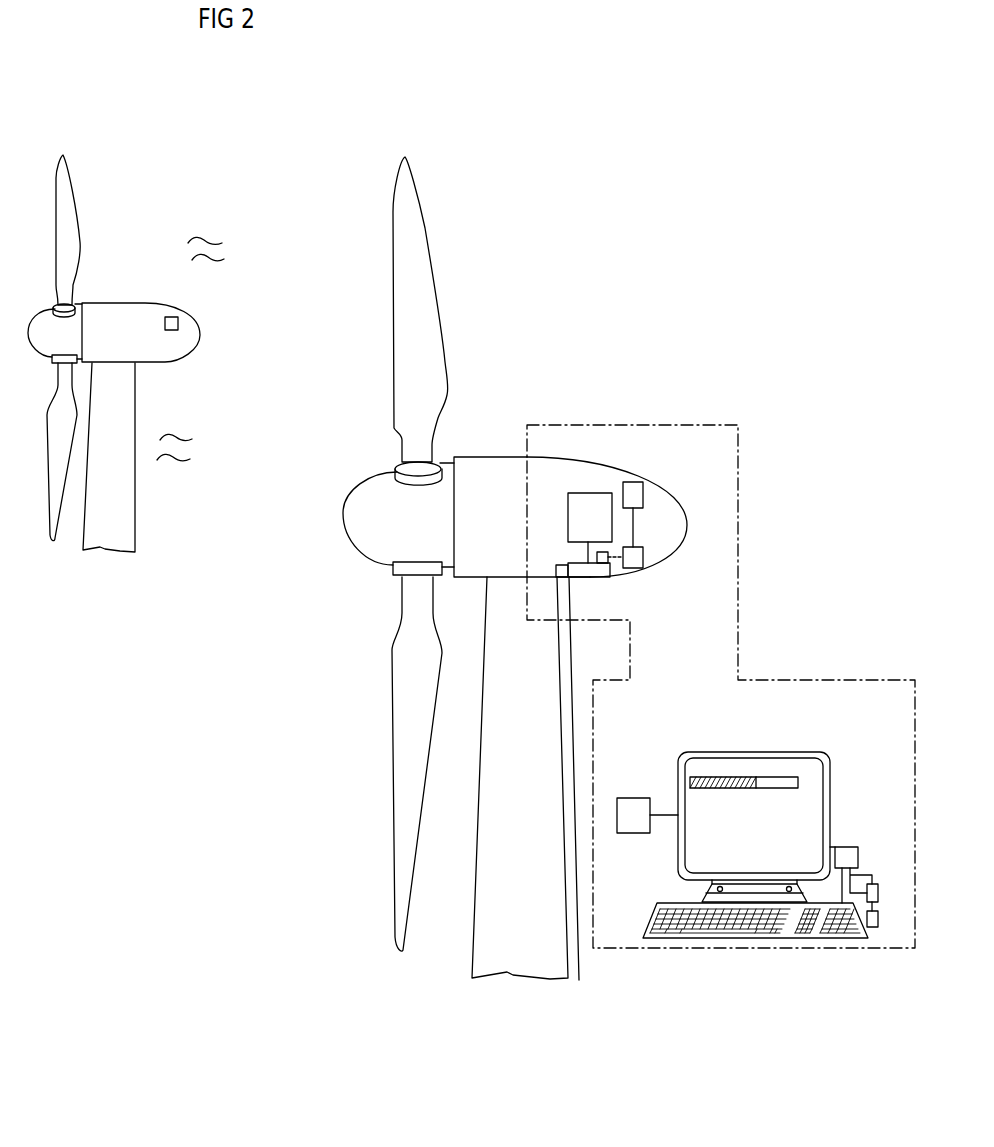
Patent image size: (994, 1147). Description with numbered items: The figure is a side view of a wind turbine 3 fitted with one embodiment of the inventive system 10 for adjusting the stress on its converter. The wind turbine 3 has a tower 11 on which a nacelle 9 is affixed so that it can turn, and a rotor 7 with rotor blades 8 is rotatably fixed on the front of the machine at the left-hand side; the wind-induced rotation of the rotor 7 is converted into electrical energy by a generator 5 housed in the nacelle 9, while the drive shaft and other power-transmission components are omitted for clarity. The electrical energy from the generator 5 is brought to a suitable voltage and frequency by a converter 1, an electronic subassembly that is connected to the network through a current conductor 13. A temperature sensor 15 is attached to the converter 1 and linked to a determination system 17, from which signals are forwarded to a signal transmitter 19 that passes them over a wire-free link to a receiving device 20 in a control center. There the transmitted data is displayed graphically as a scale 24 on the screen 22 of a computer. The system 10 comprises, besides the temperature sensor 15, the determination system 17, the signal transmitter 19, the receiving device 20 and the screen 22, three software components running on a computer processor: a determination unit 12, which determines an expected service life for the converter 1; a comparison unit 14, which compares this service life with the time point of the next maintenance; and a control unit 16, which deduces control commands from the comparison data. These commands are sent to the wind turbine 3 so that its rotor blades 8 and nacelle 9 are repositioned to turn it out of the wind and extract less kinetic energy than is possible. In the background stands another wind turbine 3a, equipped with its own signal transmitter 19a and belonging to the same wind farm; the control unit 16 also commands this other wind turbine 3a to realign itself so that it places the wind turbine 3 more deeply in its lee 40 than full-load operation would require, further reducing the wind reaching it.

The converter 1 is at (580, 578).
The wind turbine 3 is at (604, 378).
The other wind turbine 3a is at (114, 353).
The generator 5 is at (568, 520).
The rotor 7 is at (355, 468).
The rotor blades 8 is at (393, 328).
The nacelle 9 is at (497, 456).
The system 10 is at (822, 679).
The tower 11 is at (571, 650).
The determination unit 12 is at (845, 847).
The current conductor 13 is at (556, 669).
The comparison unit 14 is at (874, 884).
The temperature sensor 15 is at (601, 566).
The control unit 16 is at (879, 918).
The determination system 17 is at (634, 570).
The signal transmitter 19 is at (660, 438).
The signal transmitter 19a is at (189, 272).
The receiving device 20 is at (604, 800).
The screen 22 is at (785, 745).
The scale 24 is at (722, 776).
The lee 40 is at (196, 238).